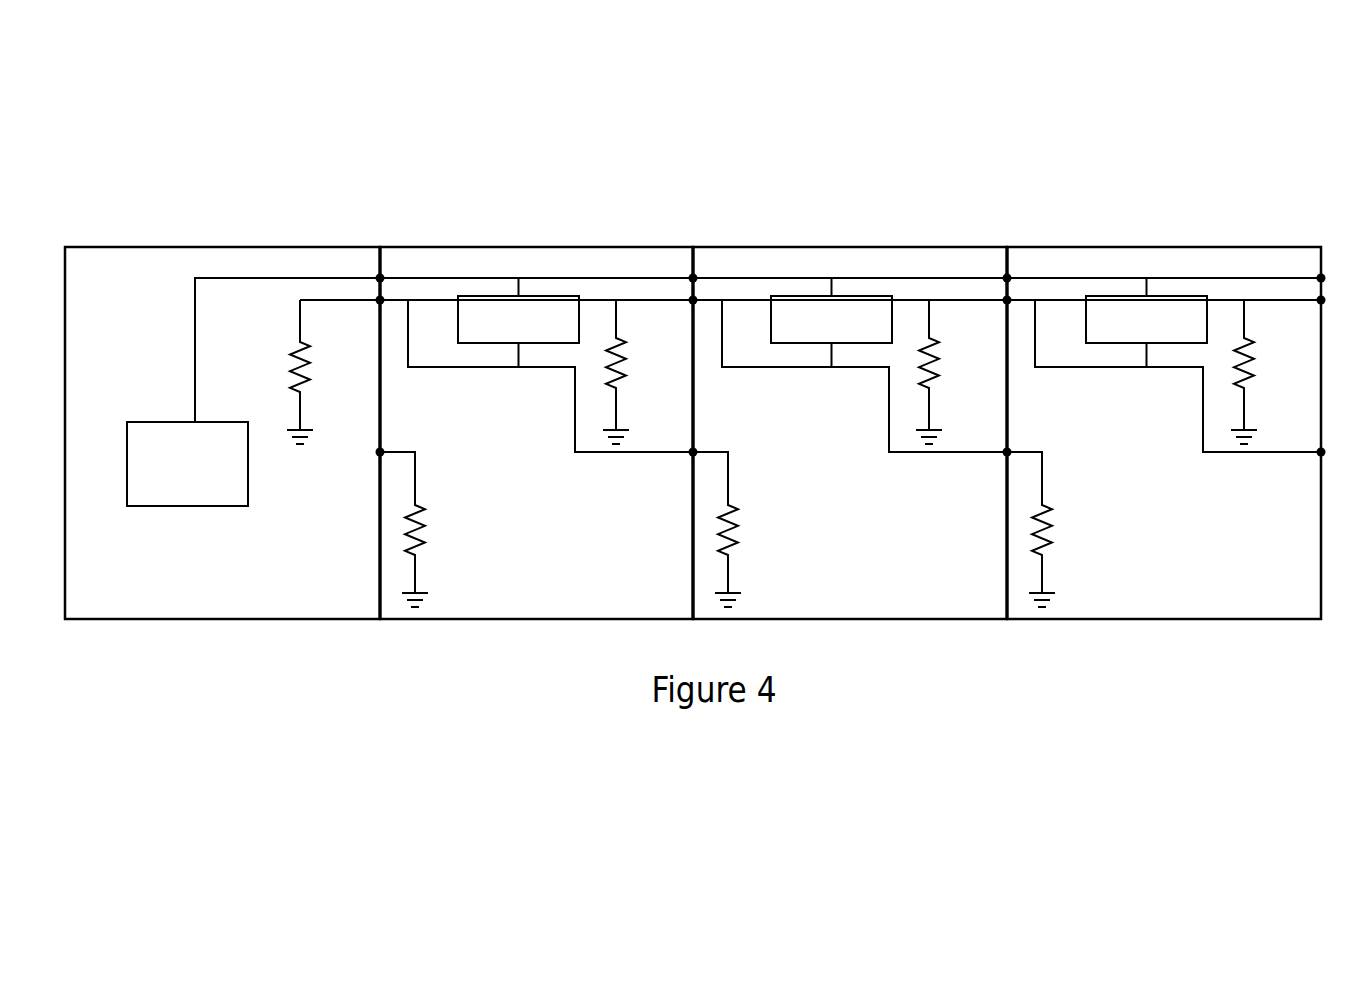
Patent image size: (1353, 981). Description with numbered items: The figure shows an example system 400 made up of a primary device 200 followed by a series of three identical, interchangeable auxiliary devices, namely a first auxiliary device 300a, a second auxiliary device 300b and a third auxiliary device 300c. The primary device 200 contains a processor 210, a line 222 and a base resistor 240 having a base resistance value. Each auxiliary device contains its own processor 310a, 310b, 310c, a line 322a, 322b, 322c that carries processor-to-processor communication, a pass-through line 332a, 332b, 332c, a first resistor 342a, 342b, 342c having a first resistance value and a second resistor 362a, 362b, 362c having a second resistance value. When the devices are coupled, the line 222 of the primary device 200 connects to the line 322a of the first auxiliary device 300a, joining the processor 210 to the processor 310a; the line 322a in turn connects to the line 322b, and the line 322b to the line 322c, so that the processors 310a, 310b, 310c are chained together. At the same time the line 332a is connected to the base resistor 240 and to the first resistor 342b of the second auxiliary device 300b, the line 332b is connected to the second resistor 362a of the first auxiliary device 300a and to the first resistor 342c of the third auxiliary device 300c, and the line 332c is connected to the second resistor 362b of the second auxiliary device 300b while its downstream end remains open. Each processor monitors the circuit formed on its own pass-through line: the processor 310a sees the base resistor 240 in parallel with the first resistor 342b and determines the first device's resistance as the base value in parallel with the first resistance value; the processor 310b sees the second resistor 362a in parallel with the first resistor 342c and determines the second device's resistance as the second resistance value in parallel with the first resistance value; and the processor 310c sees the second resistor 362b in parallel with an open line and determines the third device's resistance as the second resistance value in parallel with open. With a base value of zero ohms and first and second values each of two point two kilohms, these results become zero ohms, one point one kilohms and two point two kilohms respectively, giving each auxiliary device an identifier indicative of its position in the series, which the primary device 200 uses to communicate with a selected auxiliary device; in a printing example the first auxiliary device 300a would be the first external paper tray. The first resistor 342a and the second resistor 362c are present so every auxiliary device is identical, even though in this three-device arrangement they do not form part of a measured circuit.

The system 400 is at (1020, 112).
The primary device 200 is at (187, 247).
The processor 210 is at (187, 464).
The line 222 is at (312, 277).
The base resistor 240 is at (295, 362).
The first auxiliary device 300a is at (607, 247).
The second auxiliary device 300b is at (937, 247).
The third auxiliary device 300c is at (1250, 247).
The processor 310a is at (490, 297).
The processor 310b is at (807, 297).
The processor 310c is at (1119, 297).
The line 322a is at (552, 277).
The line 322b is at (873, 277).
The line 322c is at (1183, 277).
The line 332a is at (437, 367).
The line 332b is at (750, 367).
The line 332c is at (1062, 367).
The first resistor 342a is at (420, 527).
The first resistor 342b is at (733, 527).
The first resistor 342c is at (1047, 527).
The second resistor 362a is at (618, 363).
The second resistor 362b is at (935, 363).
The second resistor 362c is at (1247, 363).